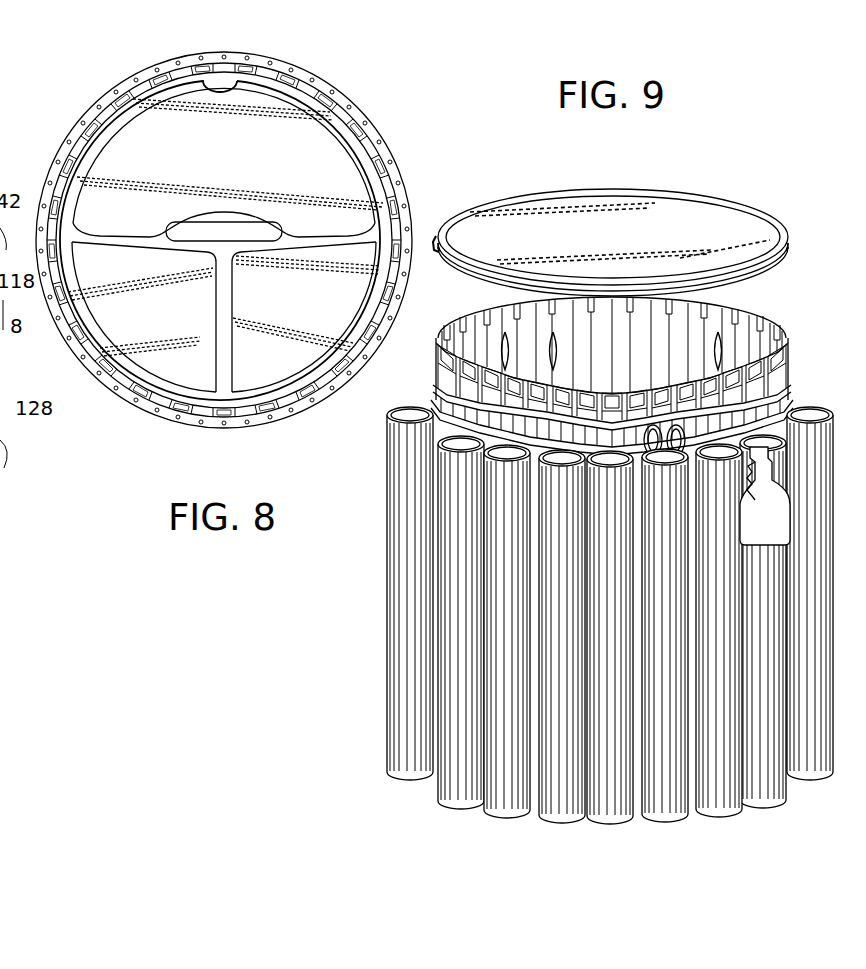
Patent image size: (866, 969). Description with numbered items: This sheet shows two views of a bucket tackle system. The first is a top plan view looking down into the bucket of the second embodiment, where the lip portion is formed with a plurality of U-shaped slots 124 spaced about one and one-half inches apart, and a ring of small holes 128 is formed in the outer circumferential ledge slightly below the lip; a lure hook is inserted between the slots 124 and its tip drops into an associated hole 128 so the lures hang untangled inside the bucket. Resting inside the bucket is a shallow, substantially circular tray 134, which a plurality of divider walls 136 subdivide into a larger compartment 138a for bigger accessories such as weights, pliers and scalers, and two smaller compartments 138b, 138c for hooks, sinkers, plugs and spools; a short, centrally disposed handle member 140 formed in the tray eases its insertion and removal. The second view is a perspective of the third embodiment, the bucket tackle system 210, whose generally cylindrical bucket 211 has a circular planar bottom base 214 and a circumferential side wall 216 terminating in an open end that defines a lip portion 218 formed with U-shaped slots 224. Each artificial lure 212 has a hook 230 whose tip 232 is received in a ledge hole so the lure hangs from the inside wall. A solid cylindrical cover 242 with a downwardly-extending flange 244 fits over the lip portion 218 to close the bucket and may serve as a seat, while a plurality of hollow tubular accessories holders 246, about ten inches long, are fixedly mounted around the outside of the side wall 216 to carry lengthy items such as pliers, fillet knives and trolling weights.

In FIG. 8, the U-shaped slots 124 is at (112, 100).
In FIG. 8, the small holes 128 is at (187, 57).
In FIG. 8, the tray 134 is at (160, 83).
In FIG. 8, the divider walls 136 is at (330, 230).
In FIG. 8, the larger compartment 138a is at (242, 162).
In FIG. 8, the smaller compartment 138b is at (193, 305).
In FIG. 8, the smaller compartment 138c is at (313, 305).
In FIG. 8, the handle member 140 is at (243, 230).
In FIG. 9, the bucket tackle system 210 is at (352, 682).
In FIG. 9, the bucket 211 is at (437, 753).
In FIG. 9, the artificial lures 212 is at (530, 318).
In FIG. 9, the bottom base 214 is at (457, 790).
In FIG. 9, the side wall 216 is at (443, 690).
In FIG. 9, the lip portion 218 is at (780, 330).
In FIG. 9, the U-shaped slots 224 is at (762, 213).
In FIG. 9, the hook 230 is at (506, 330).
In FIG. 9, the tip 232 is at (553, 408).
In FIG. 9, the cover 242 is at (440, 283).
In FIG. 9, the downwardly-extending flange 244 is at (436, 242).
In FIG. 9, the accessories holders 246 is at (827, 465).